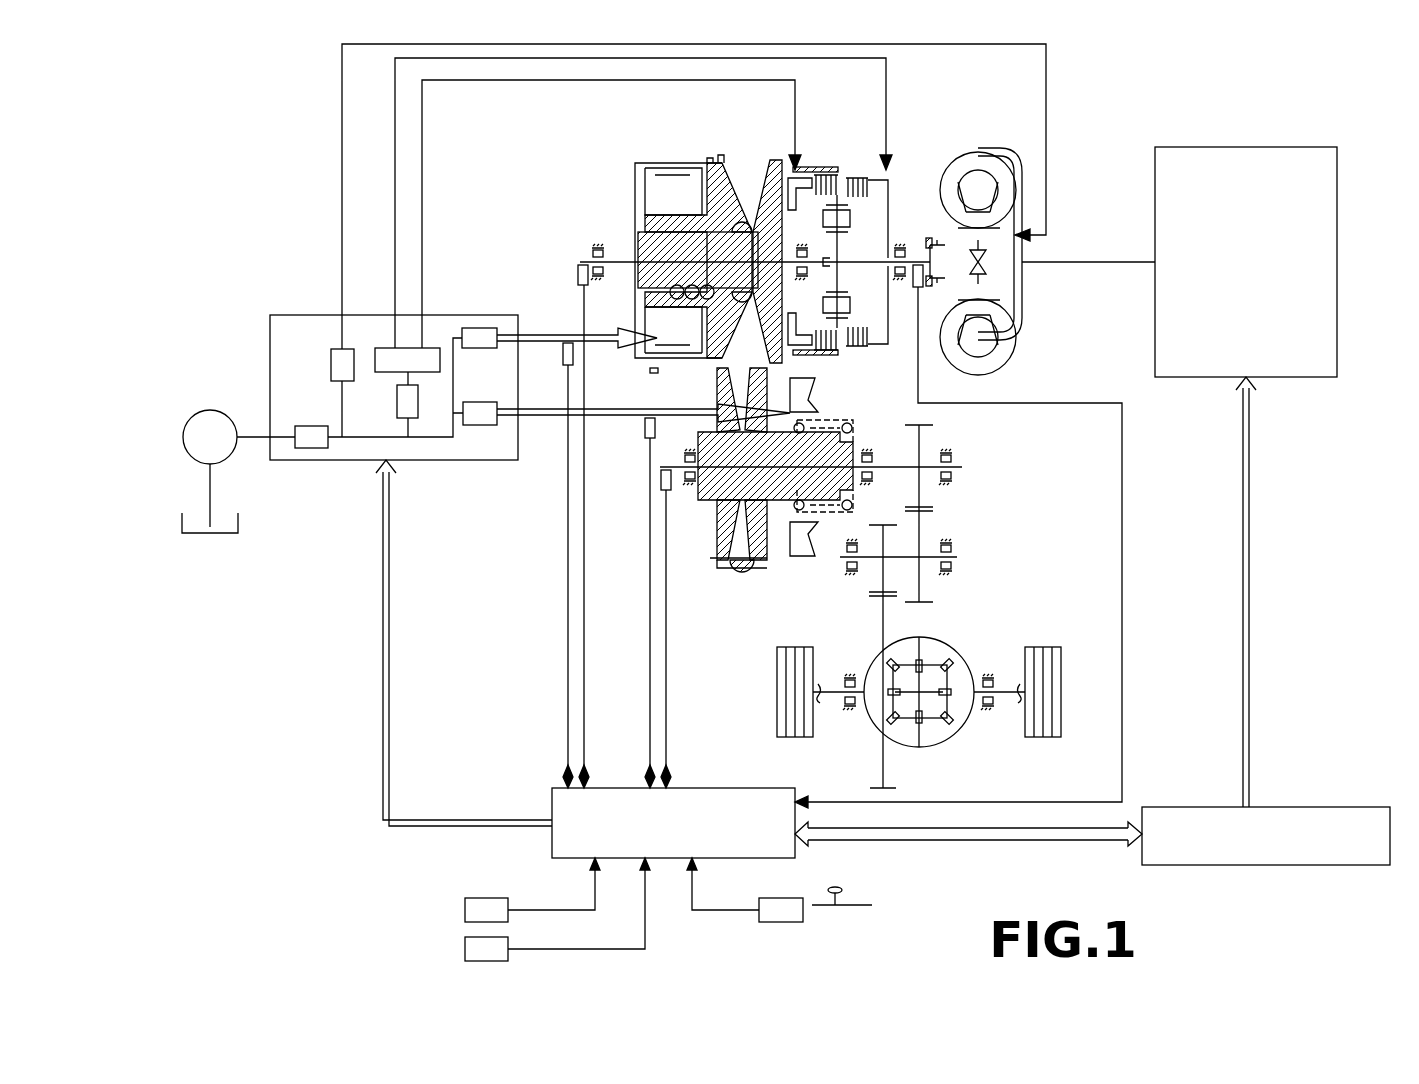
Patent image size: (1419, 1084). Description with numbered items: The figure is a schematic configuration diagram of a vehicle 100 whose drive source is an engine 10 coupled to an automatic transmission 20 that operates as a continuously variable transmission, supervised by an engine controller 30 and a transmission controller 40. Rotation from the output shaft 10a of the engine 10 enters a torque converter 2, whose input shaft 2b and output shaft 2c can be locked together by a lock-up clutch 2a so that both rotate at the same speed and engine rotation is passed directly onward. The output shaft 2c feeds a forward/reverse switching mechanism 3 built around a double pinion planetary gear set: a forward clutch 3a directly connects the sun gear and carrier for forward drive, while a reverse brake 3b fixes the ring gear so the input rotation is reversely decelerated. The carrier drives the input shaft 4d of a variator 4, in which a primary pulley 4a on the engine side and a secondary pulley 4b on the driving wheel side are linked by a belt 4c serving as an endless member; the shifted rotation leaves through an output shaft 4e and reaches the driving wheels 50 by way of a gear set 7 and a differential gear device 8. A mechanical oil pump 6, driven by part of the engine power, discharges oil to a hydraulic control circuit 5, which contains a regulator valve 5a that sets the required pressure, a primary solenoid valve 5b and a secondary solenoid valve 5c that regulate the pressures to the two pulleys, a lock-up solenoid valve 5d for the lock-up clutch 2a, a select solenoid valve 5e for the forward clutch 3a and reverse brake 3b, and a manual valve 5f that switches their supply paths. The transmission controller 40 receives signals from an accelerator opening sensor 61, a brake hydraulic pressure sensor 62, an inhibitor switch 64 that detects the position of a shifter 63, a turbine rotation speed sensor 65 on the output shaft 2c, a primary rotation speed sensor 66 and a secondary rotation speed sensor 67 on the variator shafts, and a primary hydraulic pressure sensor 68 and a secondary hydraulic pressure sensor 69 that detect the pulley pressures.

The vehicle 100 is at (205, 813).
The engine 10 is at (1248, 147).
The output shaft of the engine 10a is at (1140, 263).
The automatic transmission 20 is at (1078, 130).
The torque converter 2 is at (998, 224).
The lock-up clutch 2a is at (1013, 294).
The input shaft of the torque converter 2b is at (1037, 260).
The output shaft of the torque converter 2c is at (915, 258).
The forward/reverse switching mechanism 3 is at (838, 210).
The forward clutch 3a is at (863, 177).
The reverse brake 3b is at (822, 170).
The variator 4 is at (759, 373).
The primary pulley 4a is at (648, 148).
The secondary pulley 4b is at (810, 580).
The belt 4c is at (742, 220).
The input shaft of the variator 4d is at (597, 258).
The output shaft of the variator 4e is at (878, 458).
The hydraulic control circuit 5 is at (381, 385).
The regulator valve 5a is at (316, 449).
The primary solenoid valve 5b is at (480, 328).
The secondary solenoid valve 5c is at (480, 426).
The lock-up solenoid valve 5d is at (337, 349).
The select solenoid valve 5e is at (397, 415).
The manual valve 5f is at (380, 348).
The oil pump 6 is at (196, 410).
The gear set 7 is at (978, 495).
The differential gear device 8 is at (975, 630).
The engine controller 30 is at (1276, 806).
The transmission controller 40 is at (552, 803).
The driving wheels 50 is at (777, 718).
The accelerator opening sensor 61 is at (465, 910).
The brake hydraulic pressure sensor 62 is at (465, 949).
The shifter 63 is at (842, 889).
The inhibitor switch 64 is at (797, 922).
The turbine rotation speed sensor 65 is at (912, 290).
The primary rotation speed sensor 66 is at (589, 282).
The secondary rotation speed sensor 67 is at (672, 488).
The primary hydraulic pressure sensor 68 is at (563, 362).
The secondary hydraulic pressure sensor 69 is at (647, 436).